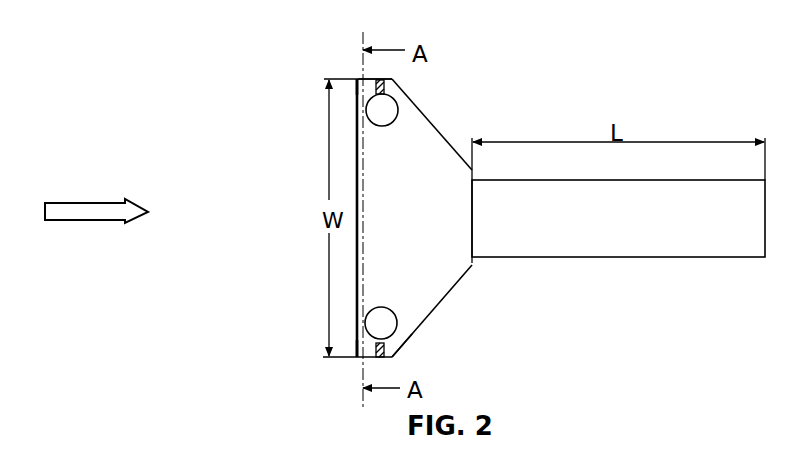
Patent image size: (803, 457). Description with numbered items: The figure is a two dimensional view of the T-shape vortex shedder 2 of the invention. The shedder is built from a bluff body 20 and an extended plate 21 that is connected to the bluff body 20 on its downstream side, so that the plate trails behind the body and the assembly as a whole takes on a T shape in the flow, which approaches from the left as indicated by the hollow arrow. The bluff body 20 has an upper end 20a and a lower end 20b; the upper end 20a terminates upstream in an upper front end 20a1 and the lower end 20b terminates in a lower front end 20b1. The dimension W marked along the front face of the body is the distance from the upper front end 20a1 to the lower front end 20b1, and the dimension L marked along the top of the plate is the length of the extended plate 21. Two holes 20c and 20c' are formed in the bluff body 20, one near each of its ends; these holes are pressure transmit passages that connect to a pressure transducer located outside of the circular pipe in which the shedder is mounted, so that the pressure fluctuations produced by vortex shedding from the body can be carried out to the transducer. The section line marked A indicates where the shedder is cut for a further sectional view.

The T-shape vortex shedder 2 is at (665, 88).
The bluff body 20 is at (447, 299).
The upper end 20a is at (367, 77).
The upper front end 20a1 is at (362, 78).
The lower end 20b is at (402, 348).
The lower front end 20b1 is at (360, 360).
The hole 20c is at (440, 358).
The hole 20c' is at (433, 79).
The extended plate 21 is at (598, 260).